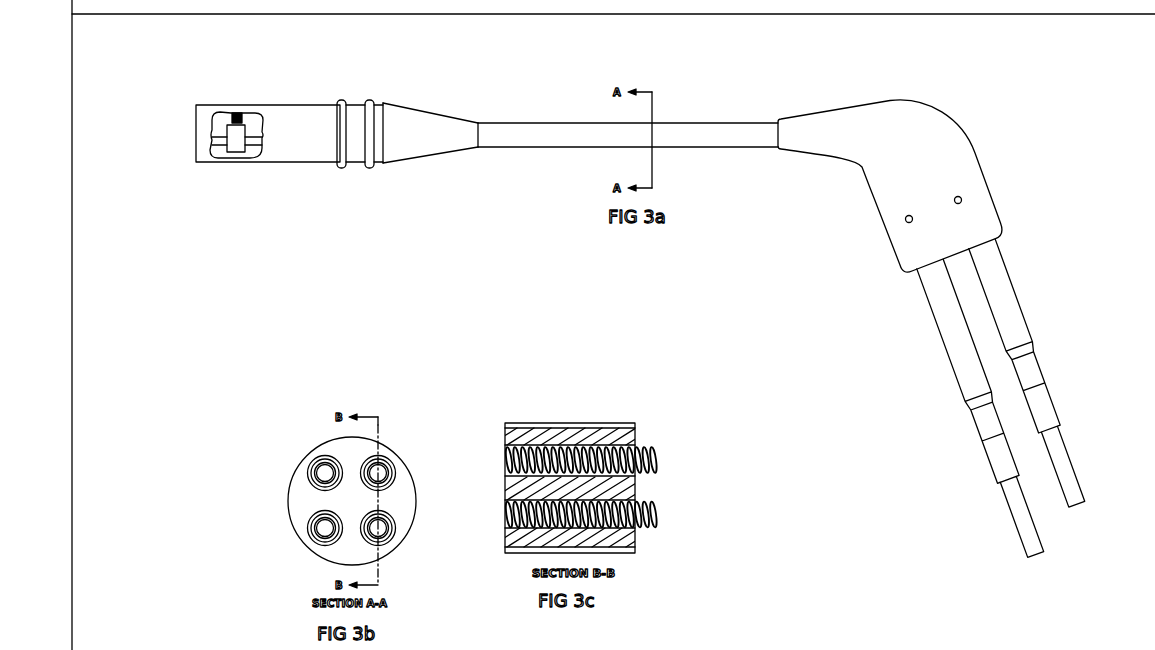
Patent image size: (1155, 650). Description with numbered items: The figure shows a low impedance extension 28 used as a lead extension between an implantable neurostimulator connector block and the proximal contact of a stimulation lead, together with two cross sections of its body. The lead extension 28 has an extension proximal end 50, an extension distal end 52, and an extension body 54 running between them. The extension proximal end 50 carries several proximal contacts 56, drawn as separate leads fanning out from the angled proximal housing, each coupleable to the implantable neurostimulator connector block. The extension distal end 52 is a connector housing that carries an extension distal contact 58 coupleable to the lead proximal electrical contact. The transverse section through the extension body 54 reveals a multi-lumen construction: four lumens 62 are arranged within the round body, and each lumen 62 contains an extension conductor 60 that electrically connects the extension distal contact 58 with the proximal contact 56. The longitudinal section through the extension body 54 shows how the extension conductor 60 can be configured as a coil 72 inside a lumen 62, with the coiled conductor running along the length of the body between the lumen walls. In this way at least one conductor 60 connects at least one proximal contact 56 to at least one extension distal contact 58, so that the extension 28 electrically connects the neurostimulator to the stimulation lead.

In FIG. 3A, the low impedance extension 28 is at (745, 78).
In FIG. 3A, the extension proximal end 50 is at (1073, 552).
In FIG. 3A, the extension distal end 52 is at (197, 105).
In FIG. 3A, the extension body 54 is at (557, 122).
In FIG. 3B, the extension body 54 is at (323, 440).
In FIG. 3C, the extension body 54 is at (635, 425).
In FIG. 3A, the proximal contact 56 is at (1038, 378).
In FIG. 3A, the extension distal contact 58 is at (232, 153).
In FIG. 3B, the extension conductor 60 is at (323, 483).
In FIG. 3B, the lumen 62 is at (315, 467).
In FIG. 3C, the lumen 62 is at (635, 497).
In FIG. 3C, the coil 72 is at (647, 450).